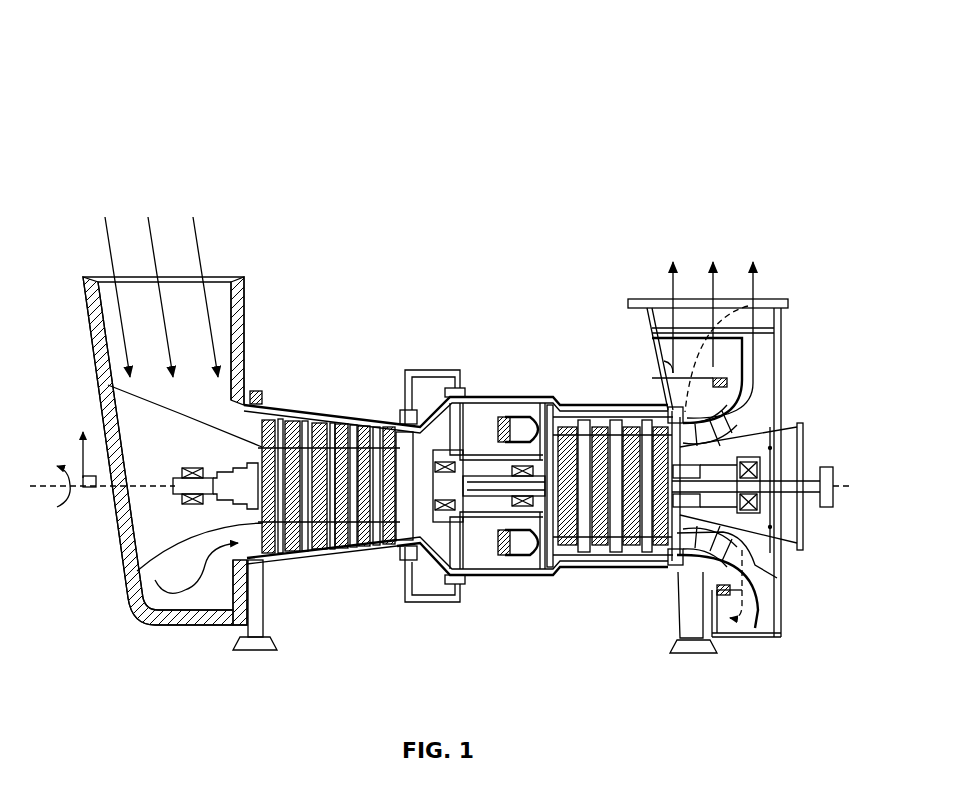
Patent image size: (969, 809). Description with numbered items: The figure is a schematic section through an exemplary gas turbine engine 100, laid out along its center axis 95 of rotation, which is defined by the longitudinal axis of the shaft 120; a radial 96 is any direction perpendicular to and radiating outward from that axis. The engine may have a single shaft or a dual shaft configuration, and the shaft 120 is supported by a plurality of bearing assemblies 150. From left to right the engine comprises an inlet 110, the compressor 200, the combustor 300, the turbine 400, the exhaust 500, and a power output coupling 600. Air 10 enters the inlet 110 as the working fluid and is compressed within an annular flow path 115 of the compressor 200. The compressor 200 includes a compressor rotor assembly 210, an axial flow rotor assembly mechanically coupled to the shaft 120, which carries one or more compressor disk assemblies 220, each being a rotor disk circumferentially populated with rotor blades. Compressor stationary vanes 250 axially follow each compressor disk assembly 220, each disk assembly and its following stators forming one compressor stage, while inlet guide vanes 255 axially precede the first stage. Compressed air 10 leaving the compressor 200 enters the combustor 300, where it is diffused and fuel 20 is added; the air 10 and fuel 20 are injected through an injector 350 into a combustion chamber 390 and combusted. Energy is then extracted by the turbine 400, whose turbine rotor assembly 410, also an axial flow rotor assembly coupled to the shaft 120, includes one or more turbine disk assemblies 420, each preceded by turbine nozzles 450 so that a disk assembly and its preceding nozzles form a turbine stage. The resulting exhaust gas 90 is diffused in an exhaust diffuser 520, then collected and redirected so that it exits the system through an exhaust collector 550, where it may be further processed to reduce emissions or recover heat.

The gas turbine engine 100 is at (117, 47).
The air 10 is at (109, 246).
The fuel 20 is at (494, 393).
The exhaust gas 90 is at (672, 290).
The center axis 95 is at (58, 504).
The radial 96 is at (78, 447).
The inlet 110 is at (240, 193).
The annular flow path 115 is at (222, 415).
The shaft 120 is at (180, 476).
The bearing assemblies 150 is at (198, 505).
The compressor 200 is at (433, 193).
The compressor rotor assembly 210 is at (330, 617).
The compressor disk assemblies 220 is at (296, 553).
The compressor stationary vanes 250 is at (322, 413).
The inlet guide vanes 255 is at (258, 400).
The combustor 300 is at (538, 193).
The injector 350 is at (500, 417).
The combustion chamber 390 is at (518, 415).
The turbine 400 is at (668, 193).
The turbine rotor assembly 410 is at (612, 615).
The turbine disk assemblies 420 is at (588, 558).
The turbine nozzles 450 is at (588, 410).
The exhaust 500 is at (810, 218).
The exhaust diffuser 520 is at (748, 308).
The exhaust collector 550 is at (640, 338).
The power output coupling 600 is at (827, 470).